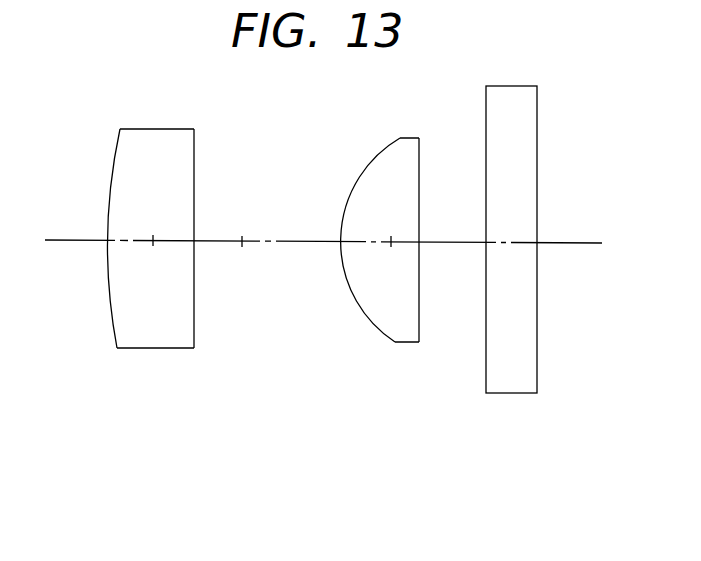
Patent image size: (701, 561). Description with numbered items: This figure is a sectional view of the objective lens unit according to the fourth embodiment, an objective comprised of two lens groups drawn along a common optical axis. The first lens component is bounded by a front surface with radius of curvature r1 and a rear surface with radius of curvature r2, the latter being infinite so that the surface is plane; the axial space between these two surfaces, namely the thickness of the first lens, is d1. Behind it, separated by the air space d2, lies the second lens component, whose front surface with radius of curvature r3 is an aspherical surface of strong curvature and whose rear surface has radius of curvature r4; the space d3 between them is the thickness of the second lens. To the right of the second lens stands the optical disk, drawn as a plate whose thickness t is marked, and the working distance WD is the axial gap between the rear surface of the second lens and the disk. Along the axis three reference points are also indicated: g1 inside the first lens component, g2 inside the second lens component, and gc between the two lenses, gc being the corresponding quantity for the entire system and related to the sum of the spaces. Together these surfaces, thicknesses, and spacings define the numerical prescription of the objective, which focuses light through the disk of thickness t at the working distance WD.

The space between lens surfaces r1 and r2 d1 is at (137, 239).
The space between lens surfaces r2 and r3 d2 is at (288, 240).
The space between lens surfaces r3 and r4 d3 is at (357, 240).
The g1 value of the first lens component g1 is at (150, 253).
The g2 value of the second lens component g2 is at (391, 253).
The gc value of the entire lens system gc is at (238, 251).
The working distance WD is at (453, 242).
The thickness of the optical disk t is at (517, 243).
The radius of curvature of the first lens surface r1 is at (115, 337).
The radius of curvature of the second lens surface r2 is at (193, 337).
The radius of curvature of the third lens surface r3 is at (380, 332).
The radius of curvature of the fourth lens surface r4 is at (422, 332).